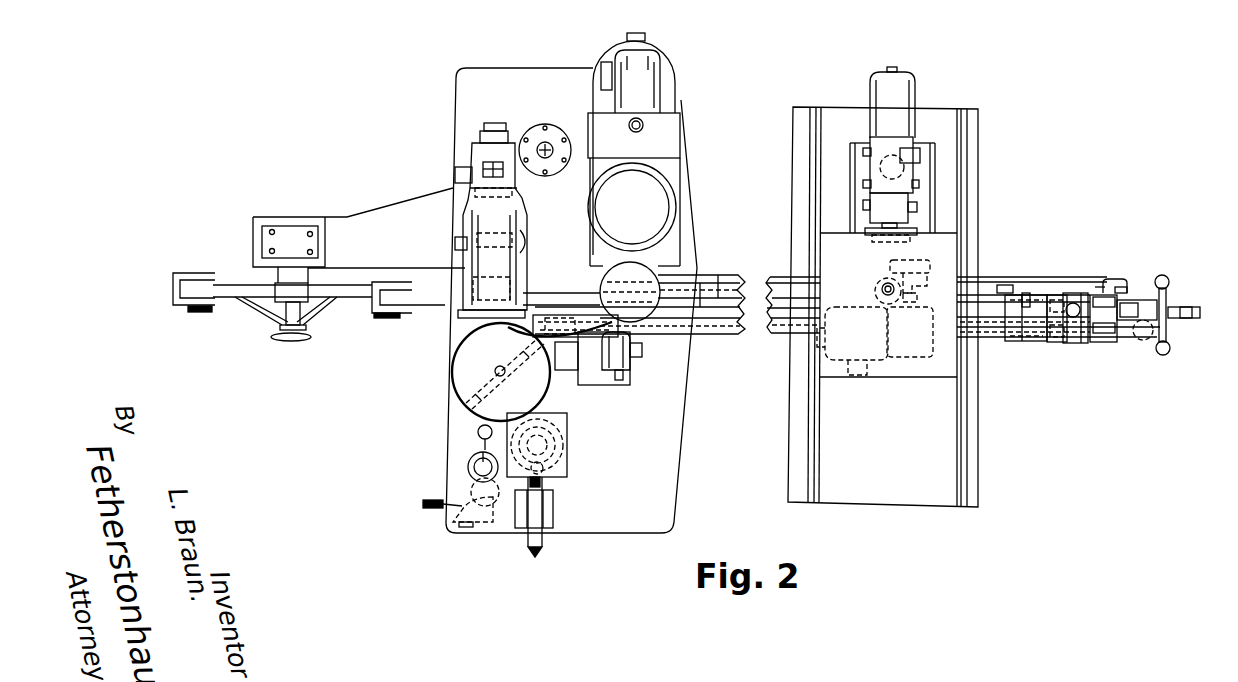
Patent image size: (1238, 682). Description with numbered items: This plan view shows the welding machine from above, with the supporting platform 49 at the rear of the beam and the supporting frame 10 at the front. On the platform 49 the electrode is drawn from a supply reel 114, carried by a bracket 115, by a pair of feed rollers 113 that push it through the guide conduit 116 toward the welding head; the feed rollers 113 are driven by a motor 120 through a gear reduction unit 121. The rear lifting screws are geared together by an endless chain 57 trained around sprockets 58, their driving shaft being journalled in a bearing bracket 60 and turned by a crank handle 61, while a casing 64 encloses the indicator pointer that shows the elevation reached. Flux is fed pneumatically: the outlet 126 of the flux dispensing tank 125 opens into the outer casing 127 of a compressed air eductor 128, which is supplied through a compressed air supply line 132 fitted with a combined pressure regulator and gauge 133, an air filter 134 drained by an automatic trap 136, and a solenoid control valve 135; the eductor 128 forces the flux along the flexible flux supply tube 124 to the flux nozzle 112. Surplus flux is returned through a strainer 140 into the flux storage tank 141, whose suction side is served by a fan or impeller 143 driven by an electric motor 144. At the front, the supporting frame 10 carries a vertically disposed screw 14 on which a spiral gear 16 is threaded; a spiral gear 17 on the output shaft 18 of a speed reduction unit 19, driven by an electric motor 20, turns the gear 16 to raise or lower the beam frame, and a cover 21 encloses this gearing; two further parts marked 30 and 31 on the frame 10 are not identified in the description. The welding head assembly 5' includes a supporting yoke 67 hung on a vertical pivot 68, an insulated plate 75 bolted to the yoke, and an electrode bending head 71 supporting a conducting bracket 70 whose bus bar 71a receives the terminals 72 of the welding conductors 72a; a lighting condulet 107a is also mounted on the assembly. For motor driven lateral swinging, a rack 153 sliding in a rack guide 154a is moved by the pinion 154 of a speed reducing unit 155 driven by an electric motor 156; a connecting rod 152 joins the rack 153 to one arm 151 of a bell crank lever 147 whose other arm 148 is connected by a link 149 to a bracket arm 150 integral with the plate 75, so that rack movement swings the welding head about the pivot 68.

The supporting platform 49 is at (623, 533).
The electric motor 144 is at (622, 97).
The fan or impeller 143 is at (681, 137).
The flux storage tank 141 is at (677, 202).
The strainer 140 is at (648, 262).
The flexible flux supply tube 124 is at (603, 318).
The guide conduit 116 is at (533, 315).
The rack 153 is at (546, 320).
The rack guide 154a is at (572, 322).
The pinion 154 is at (586, 322).
The bracket 115 is at (385, 210).
The supply reel 114 is at (232, 305).
The feed rollers 113 is at (458, 300).
The motor 120 is at (462, 160).
The gear reduction unit 121 is at (462, 208).
The flux dispensing tank 125 is at (455, 380).
The outlet 126 is at (504, 374).
The outer casing 127 is at (470, 380).
The syphon or compressed air eductor 128 is at (492, 358).
The speed reducing unit 155 is at (630, 385).
The electric motor 156 is at (643, 352).
The endless chain 57 is at (545, 433).
The casing 64 is at (565, 442).
The sprockets 58 is at (543, 470).
The bearing bracket 60 is at (553, 515).
The crank handle 61 is at (527, 550).
The solenoid control valve 135 is at (478, 433).
The air filter 134 is at (468, 467).
The automatic trap 136 is at (471, 488).
The combined air pressure regulator and gauge 133 is at (455, 517).
The compressed air supply line 132 is at (458, 412).
The supporting frame 10 is at (806, 406).
The motor 31 is at (878, 91).
The slide 30 is at (874, 138).
The spiral gear 16 is at (888, 272).
The vertically disposed screw 14 is at (882, 289).
The spiral gear 17 is at (920, 286).
The output shaft 18 is at (915, 300).
The speed reduction unit 19 is at (905, 357).
The electric motor 20 is at (843, 310).
The cover 21 is at (888, 358).
The welding conductors 72a is at (1060, 278).
The connecting rod 152 is at (982, 338).
The bell crank lever 147 is at (1005, 288).
The arm 148 is at (1018, 288).
The link 149 is at (1026, 293).
The bracket arm 150 is at (1030, 322).
The arm 151 is at (1028, 342).
The supporting yoke 67 is at (1073, 318).
The vertical pivot 68 is at (1082, 343).
The electrode bending head 71 is at (1100, 342).
The plate 75 is at (1100, 343).
The bus bar 71a is at (1116, 282).
The terminals 72 is at (1103, 284).
The welding head assembly 5' is at (1141, 261).
The conducting bracket 70 is at (1138, 288).
The flux nozzle 112 is at (1147, 340).
The lighting condulet 107a is at (1170, 302).